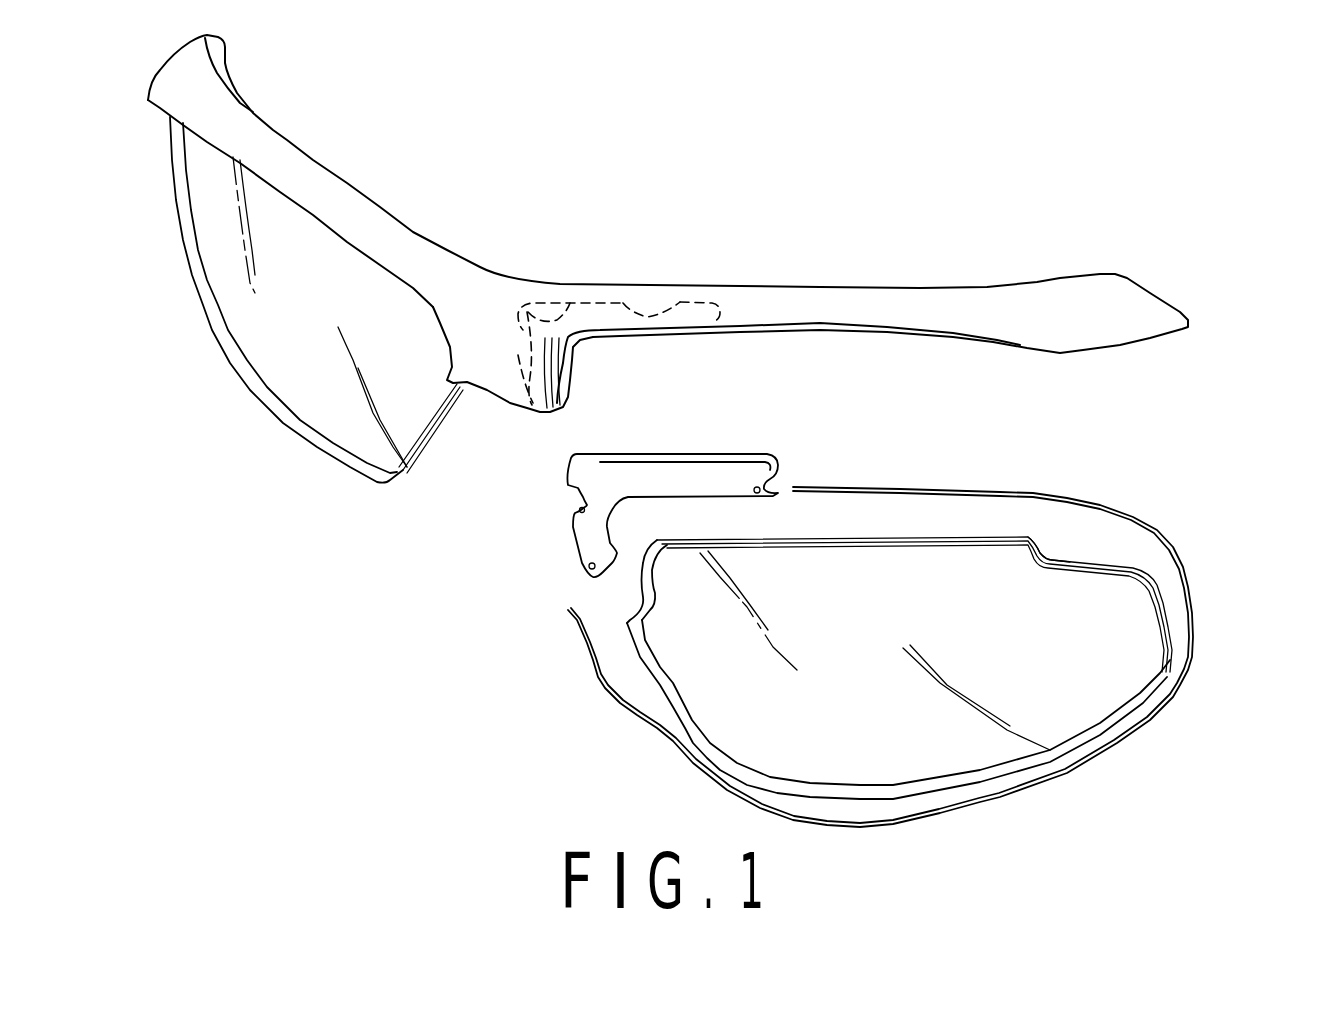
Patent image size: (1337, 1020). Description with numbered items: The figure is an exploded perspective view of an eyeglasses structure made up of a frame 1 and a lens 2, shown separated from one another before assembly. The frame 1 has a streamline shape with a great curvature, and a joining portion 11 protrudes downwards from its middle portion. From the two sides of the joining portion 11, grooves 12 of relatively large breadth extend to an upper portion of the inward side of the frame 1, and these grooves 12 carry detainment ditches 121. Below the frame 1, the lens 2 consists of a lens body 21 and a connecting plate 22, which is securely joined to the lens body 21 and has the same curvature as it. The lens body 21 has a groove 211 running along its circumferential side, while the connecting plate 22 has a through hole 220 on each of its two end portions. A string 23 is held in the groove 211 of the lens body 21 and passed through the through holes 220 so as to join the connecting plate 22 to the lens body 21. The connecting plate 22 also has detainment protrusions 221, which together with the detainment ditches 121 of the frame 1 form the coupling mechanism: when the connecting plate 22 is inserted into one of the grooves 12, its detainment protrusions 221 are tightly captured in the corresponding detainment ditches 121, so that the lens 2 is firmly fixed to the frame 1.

The frame 1 is at (1103, 317).
The joining portion 11 is at (488, 373).
The grooves 12 is at (687, 300).
The detainment ditches 121 is at (573, 303).
The lens 2 is at (585, 707).
The lens body 21 is at (238, 358).
The groove 211 is at (1072, 553).
The connecting plate 22 is at (675, 478).
The through hole 220 is at (589, 568).
The detainment protrusions 221 is at (568, 486).
The string 23 is at (1160, 707).